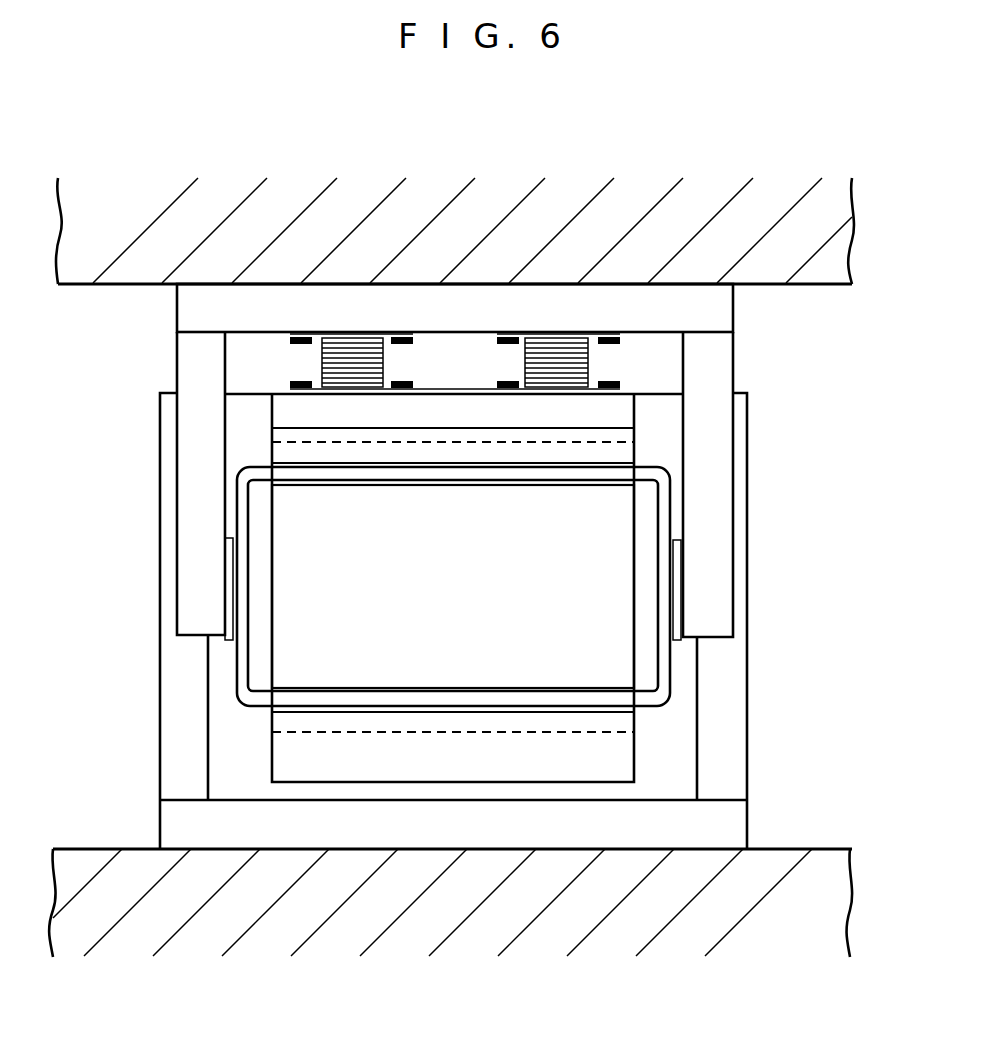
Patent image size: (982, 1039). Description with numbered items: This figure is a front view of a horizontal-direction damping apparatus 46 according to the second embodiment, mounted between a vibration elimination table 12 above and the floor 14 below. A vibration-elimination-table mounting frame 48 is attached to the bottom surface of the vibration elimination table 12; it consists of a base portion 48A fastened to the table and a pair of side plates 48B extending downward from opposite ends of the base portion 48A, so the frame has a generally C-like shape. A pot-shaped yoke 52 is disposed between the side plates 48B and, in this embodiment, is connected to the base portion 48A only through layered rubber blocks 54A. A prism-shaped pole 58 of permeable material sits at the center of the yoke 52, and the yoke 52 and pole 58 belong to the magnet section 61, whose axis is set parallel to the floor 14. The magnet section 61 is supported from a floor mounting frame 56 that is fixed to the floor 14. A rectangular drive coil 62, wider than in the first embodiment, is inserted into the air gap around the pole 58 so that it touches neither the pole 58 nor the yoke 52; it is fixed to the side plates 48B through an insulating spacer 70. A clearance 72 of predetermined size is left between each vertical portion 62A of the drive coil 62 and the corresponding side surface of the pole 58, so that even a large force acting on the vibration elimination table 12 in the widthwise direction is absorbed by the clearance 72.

The vibration elimination table 12 is at (122, 286).
The floor 14 is at (788, 849).
The horizontal-direction damping apparatus 46 is at (497, 621).
The vibration-elimination-table mounting frame 48 is at (456, 460).
The base portion 48A is at (703, 323).
The side plates 48B is at (192, 360).
The yoke 52 is at (392, 595).
The layered rubber blocks 54A is at (317, 363).
The floor mounting frame 56 is at (747, 827).
The pole 58 is at (595, 668).
The magnet section 61 is at (270, 743).
The drive coil 62 is at (739, 713).
The vertical portion 62A is at (662, 710).
The spacer 70 is at (233, 640).
The clearance 72 is at (262, 533).